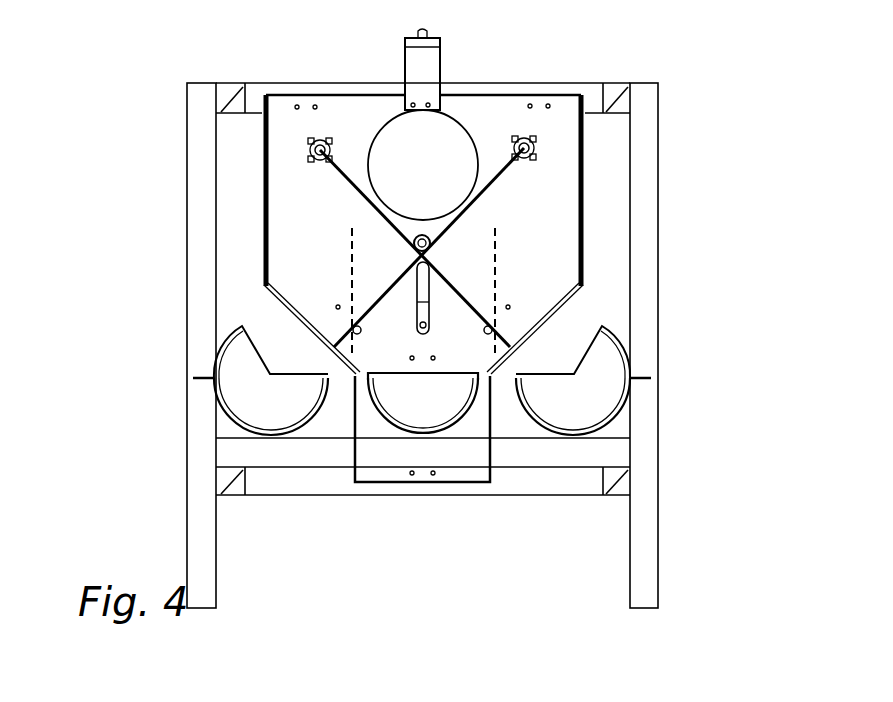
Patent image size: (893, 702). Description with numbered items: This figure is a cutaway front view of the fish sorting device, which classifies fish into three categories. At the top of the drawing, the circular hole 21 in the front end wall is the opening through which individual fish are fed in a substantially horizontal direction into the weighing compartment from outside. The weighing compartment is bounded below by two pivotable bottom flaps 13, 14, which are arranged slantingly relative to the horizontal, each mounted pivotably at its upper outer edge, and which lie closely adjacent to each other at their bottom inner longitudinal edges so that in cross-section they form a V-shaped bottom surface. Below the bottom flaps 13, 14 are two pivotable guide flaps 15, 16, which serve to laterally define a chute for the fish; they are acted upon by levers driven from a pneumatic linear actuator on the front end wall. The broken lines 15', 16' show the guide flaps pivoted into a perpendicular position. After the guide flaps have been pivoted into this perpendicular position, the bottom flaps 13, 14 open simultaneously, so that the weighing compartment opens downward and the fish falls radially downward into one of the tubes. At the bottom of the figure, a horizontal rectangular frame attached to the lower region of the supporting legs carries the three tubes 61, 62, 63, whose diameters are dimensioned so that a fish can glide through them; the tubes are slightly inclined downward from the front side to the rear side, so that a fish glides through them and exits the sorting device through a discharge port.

The bottom flap 13 is at (356, 190).
The bottom flap 14 is at (493, 190).
The guide flap 15 is at (435, 350).
The guide flap 16 is at (424, 344).
The perpendicular position of guide flap 15' is at (237, 292).
The perpendicular position of guide flap 16' is at (614, 292).
The circular hole 21 is at (438, 147).
The tube 61 is at (272, 410).
The tube 62 is at (431, 412).
The tube 63 is at (596, 408).